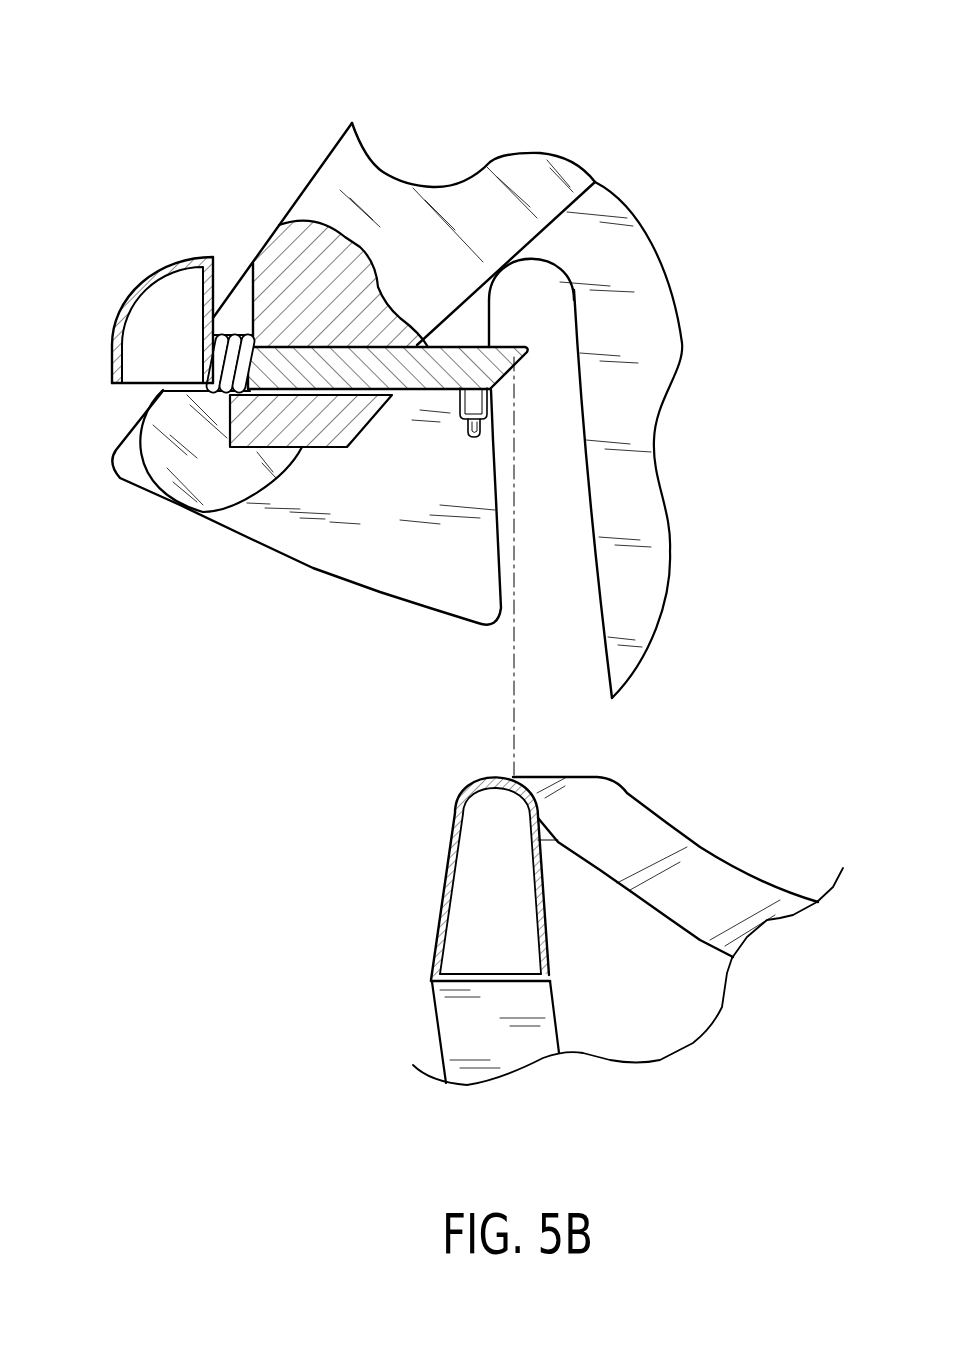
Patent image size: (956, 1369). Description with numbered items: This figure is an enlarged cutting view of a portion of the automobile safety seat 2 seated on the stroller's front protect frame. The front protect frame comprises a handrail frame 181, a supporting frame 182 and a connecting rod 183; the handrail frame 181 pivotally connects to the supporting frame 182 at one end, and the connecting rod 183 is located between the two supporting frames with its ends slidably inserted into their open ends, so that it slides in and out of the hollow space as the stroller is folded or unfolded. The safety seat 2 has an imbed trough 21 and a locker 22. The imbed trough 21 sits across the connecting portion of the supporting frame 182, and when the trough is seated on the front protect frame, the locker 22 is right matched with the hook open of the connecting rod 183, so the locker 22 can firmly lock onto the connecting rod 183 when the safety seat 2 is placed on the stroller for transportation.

The automobile safety seat 2 is at (447, 85).
The imbed trough 21 is at (552, 590).
The locker 22 is at (131, 296).
The handrail frame 181 is at (720, 900).
The supporting frame 182 is at (457, 1033).
The connecting rod 183 is at (437, 912).